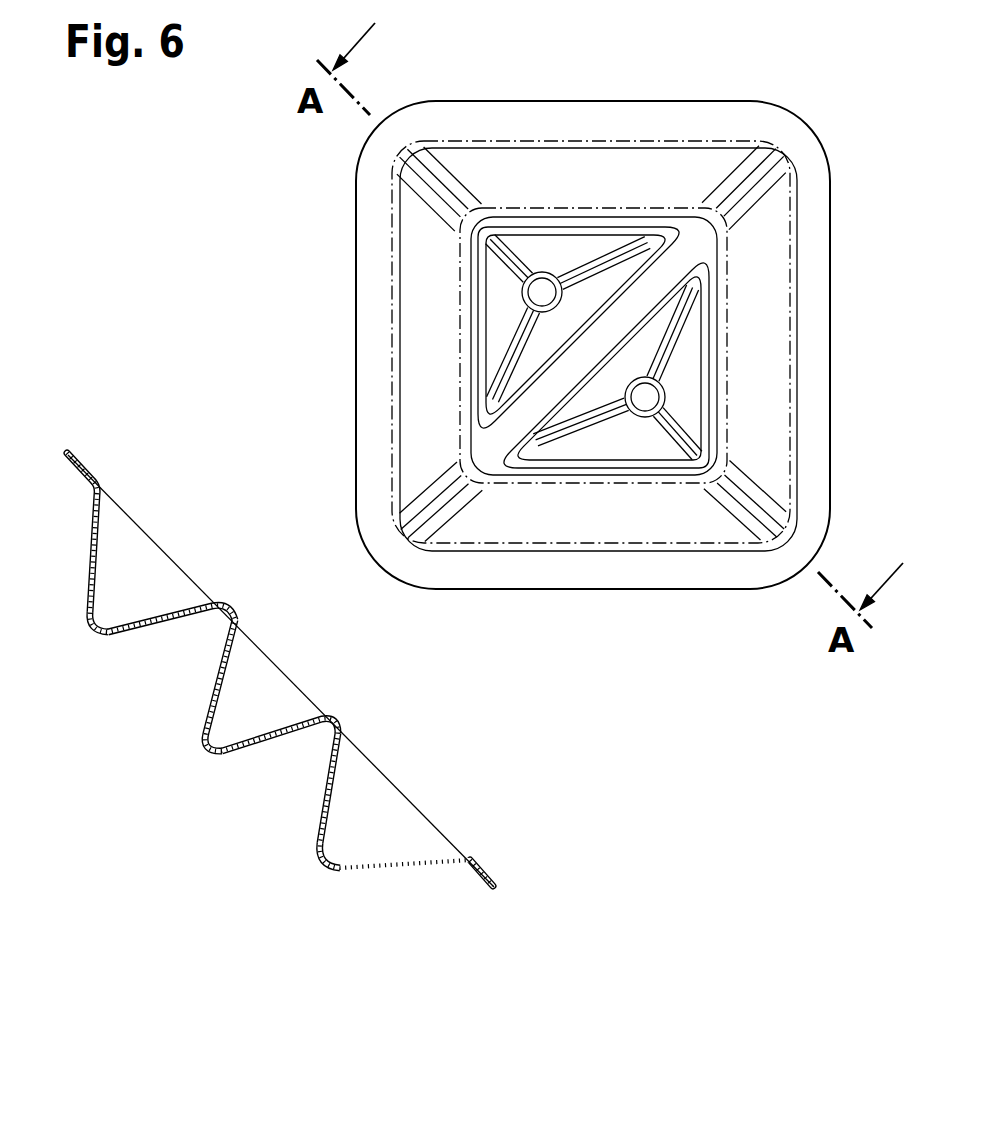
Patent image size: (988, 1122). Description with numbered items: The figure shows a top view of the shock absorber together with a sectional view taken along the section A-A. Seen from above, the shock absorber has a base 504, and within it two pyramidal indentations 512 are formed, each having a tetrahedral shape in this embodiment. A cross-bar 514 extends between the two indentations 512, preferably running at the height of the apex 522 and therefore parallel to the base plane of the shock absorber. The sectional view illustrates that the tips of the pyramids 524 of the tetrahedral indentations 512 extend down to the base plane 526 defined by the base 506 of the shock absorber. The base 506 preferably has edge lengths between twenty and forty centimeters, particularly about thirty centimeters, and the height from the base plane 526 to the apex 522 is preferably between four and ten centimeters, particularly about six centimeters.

The base 504 is at (546, 572).
The base 506 is at (672, 513).
The pyramidal indentation 512 is at (567, 248).
The cross-bar 514 is at (624, 307).
The apex 522 is at (472, 345).
The tip of the pyramid 524 is at (233, 612).
The base plane 526 is at (410, 796).